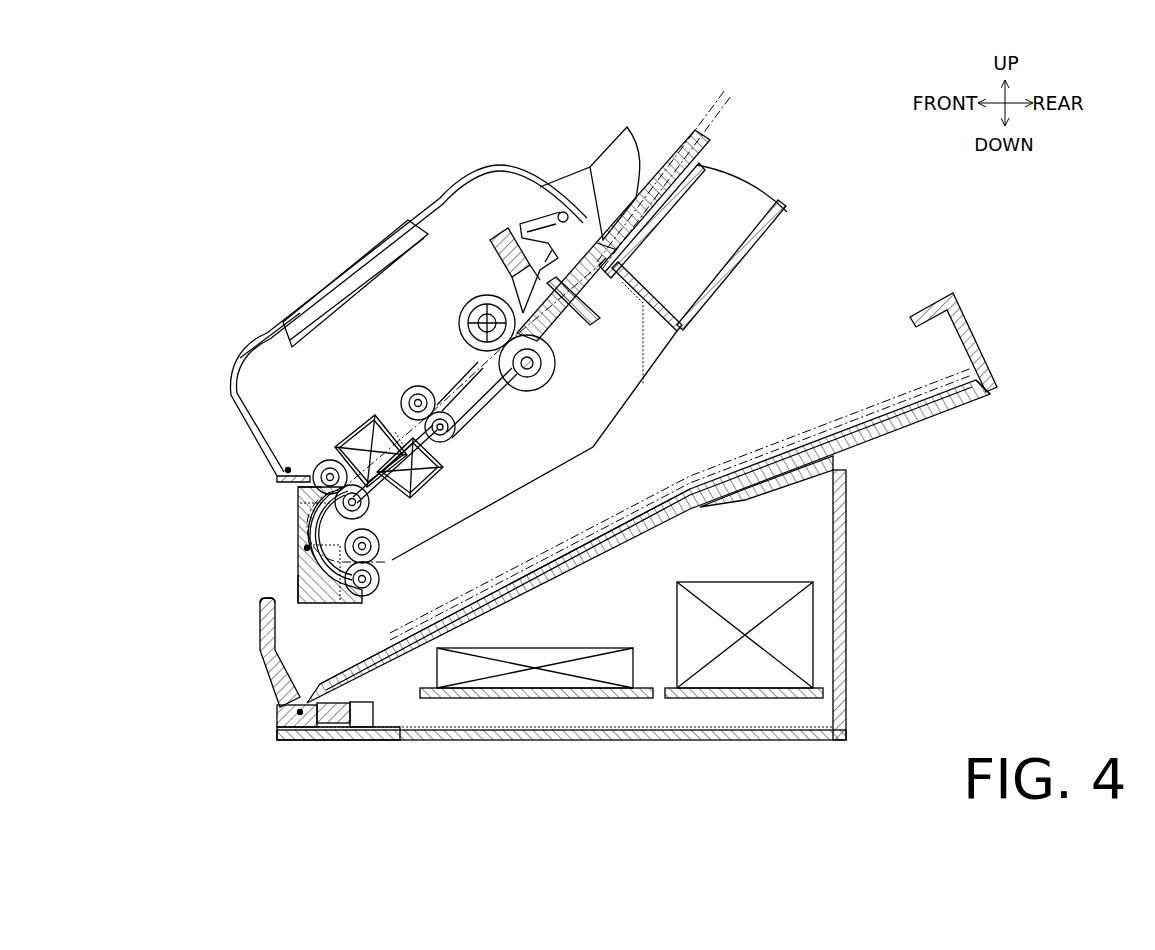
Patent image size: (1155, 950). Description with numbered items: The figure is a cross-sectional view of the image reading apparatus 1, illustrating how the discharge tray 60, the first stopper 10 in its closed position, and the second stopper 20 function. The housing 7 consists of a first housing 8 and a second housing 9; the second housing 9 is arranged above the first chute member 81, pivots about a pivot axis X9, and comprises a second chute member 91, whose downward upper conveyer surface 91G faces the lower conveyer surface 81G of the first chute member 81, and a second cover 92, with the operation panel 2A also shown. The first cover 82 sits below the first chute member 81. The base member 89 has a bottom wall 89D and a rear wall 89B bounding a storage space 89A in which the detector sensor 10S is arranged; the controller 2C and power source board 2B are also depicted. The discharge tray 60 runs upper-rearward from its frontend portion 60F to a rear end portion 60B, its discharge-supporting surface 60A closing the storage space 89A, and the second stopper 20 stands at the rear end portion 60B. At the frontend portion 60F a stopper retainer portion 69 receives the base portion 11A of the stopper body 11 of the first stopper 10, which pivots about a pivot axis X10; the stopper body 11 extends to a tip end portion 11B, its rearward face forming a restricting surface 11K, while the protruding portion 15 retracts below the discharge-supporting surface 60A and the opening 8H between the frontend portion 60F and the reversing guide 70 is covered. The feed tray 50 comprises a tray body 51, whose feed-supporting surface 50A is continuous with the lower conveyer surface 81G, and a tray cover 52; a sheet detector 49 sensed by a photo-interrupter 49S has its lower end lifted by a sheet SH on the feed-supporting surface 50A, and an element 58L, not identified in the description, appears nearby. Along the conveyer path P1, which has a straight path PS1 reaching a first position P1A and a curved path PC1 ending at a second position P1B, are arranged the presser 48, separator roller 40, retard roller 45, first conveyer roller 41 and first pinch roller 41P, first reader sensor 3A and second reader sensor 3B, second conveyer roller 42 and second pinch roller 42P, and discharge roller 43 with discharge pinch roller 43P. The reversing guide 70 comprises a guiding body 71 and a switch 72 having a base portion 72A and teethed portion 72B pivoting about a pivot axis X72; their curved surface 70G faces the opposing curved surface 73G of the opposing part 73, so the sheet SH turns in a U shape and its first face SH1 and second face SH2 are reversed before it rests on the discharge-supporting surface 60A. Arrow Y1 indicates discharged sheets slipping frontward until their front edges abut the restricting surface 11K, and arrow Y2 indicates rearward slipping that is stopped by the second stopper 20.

The image reading apparatus 1 is at (880, 130).
The operation panel 2A is at (335, 275).
The power source board 2B is at (775, 647).
The controller 2C is at (604, 679).
The first reader sensor 3A is at (430, 470).
The second reader sensor 3B is at (365, 440).
The housing 7 is at (617, 628).
The first housing 8 is at (613, 628).
The opening 8H is at (256, 655).
The second housing 9 is at (434, 362).
The first stopper 10 is at (288, 692).
The detector sensor 10S is at (365, 716).
The stopper body 11 is at (235, 653).
The base portion 11A is at (283, 713).
The tip end portion 11B is at (262, 608).
The restricting surface 11K is at (300, 678).
The protruding portion 15 is at (333, 723).
The second stopper 20 is at (990, 323).
The separator roller 40 is at (496, 265).
The first conveyer roller 41 is at (413, 388).
The first pinch roller 41P is at (455, 428).
The second conveyer roller 42 is at (329, 459).
The second pinch roller 42P is at (370, 502).
The discharge roller 43 is at (380, 578).
The discharge pinch roller 43P is at (380, 546).
The retard roller 45 is at (550, 366).
The presser 48 is at (503, 275).
The sheet detector 49 is at (560, 278).
The photo-interrupter 49S is at (522, 226).
The feed tray 50 is at (611, 169).
The feed-supporting surface 50A is at (638, 203).
The tray body 51 is at (663, 222).
The tray cover 52 is at (732, 262).
The lever 58L is at (617, 160).
The discharge tray 60 is at (700, 541).
The discharge-supporting surface 60A is at (682, 488).
The rear end portion 60B is at (992, 392).
The frontend portion 60F is at (277, 738).
The stopper retainer portion 69 is at (275, 730).
The reversing guide 70 is at (311, 512).
The curved surface 70G is at (268, 622).
The guiding body 71 is at (262, 600).
The switch 72 is at (245, 517).
The base portion 72A is at (296, 492).
The teethed portion 72B is at (296, 578).
The opposing part 73 is at (295, 535).
The opposing curved surface 73G is at (298, 535).
The first chute member 81 is at (543, 359).
The lower conveyer surface 81G is at (563, 302).
The first cover 82 is at (612, 432).
The base member 89 is at (613, 628).
The storage space 89A is at (783, 724).
The rear wall 89B is at (846, 528).
The bottom wall 89D is at (682, 742).
The second chute member 91 is at (471, 353).
The upper conveyer surface 91G is at (440, 400).
The second cover 92 is at (270, 327).
The conveyer path P1 is at (368, 560).
The first position P1A is at (333, 470).
The second position P1B is at (372, 600).
The curved path PC1 is at (298, 504).
The straight path PS1 is at (395, 430).
The sheet SH is at (722, 128).
The first face SH1 is at (700, 138).
The second face SH2 is at (688, 125).
The pivot axis X9 is at (286, 468).
The pivot axis X10 is at (300, 716).
The pivot axis X72 is at (305, 549).
The arrow Y1 is at (520, 560).
The arrow Y2 is at (957, 365).